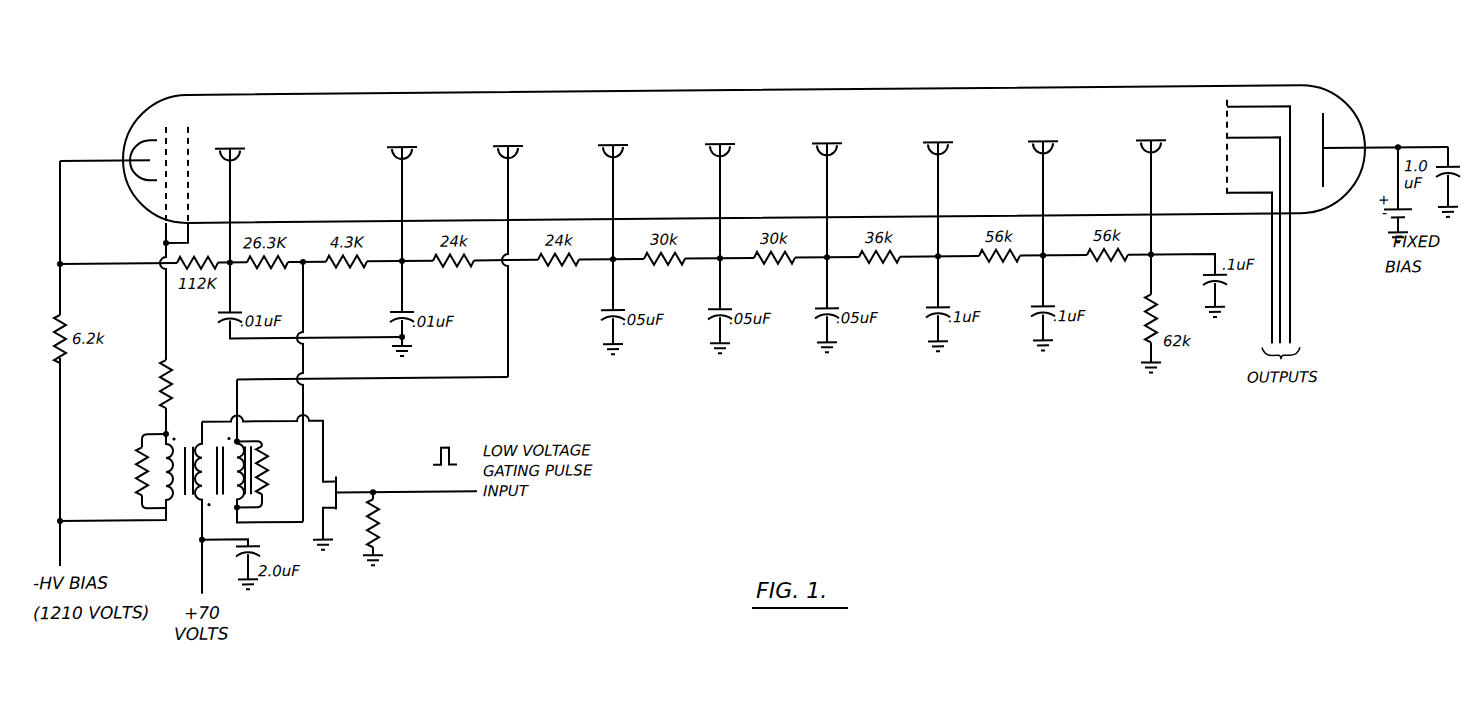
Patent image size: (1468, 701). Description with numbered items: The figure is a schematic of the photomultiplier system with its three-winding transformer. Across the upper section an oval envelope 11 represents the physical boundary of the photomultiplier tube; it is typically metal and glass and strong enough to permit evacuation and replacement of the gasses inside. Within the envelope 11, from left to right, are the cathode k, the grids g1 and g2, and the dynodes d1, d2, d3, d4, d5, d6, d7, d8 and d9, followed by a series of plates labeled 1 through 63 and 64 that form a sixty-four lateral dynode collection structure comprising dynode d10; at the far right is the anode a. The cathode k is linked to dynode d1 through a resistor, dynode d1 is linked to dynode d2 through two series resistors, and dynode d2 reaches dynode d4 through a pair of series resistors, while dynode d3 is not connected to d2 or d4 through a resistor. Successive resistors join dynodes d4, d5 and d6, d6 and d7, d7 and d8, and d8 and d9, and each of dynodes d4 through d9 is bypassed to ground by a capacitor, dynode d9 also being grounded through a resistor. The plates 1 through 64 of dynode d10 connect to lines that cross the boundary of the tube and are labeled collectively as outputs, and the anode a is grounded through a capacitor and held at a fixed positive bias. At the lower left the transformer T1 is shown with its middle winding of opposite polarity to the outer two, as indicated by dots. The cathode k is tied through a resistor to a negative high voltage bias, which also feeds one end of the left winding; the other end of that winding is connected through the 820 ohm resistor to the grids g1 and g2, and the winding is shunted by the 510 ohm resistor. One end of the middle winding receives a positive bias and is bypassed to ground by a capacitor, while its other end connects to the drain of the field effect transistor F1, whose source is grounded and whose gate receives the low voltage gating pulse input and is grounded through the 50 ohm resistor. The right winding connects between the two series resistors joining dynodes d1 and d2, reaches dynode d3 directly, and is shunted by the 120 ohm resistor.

The envelope 11 is at (867, 96).
The cathode k is at (108, 160).
The grid g1 is at (160, 235).
The grid g2 is at (188, 176).
The dynode d1 is at (230, 218).
The dynode d2 is at (402, 218).
The dynode d3 is at (508, 250).
The dynode d4 is at (613, 216).
The dynode d5 is at (720, 215).
The dynode d6 is at (827, 214).
The dynode d7 is at (938, 213).
The dynode d8 is at (1043, 212).
The dynode d9 is at (1151, 205).
The dynode d10 is at (1248, 148).
The anode a is at (1385, 149).
The plate 64 is at (1240, 221).
The plate 63 is at (1235, 236).
The plate 1 is at (1239, 262).
The transformer T1 is at (197, 459).
The field effect transistor F1 is at (395, 497).
The ohm resistor 50 is at (386, 528).
The ohm resistor 120 is at (266, 470).
The ohm resistor 510 is at (129, 471).
The ohm resistor 820 is at (141, 397).